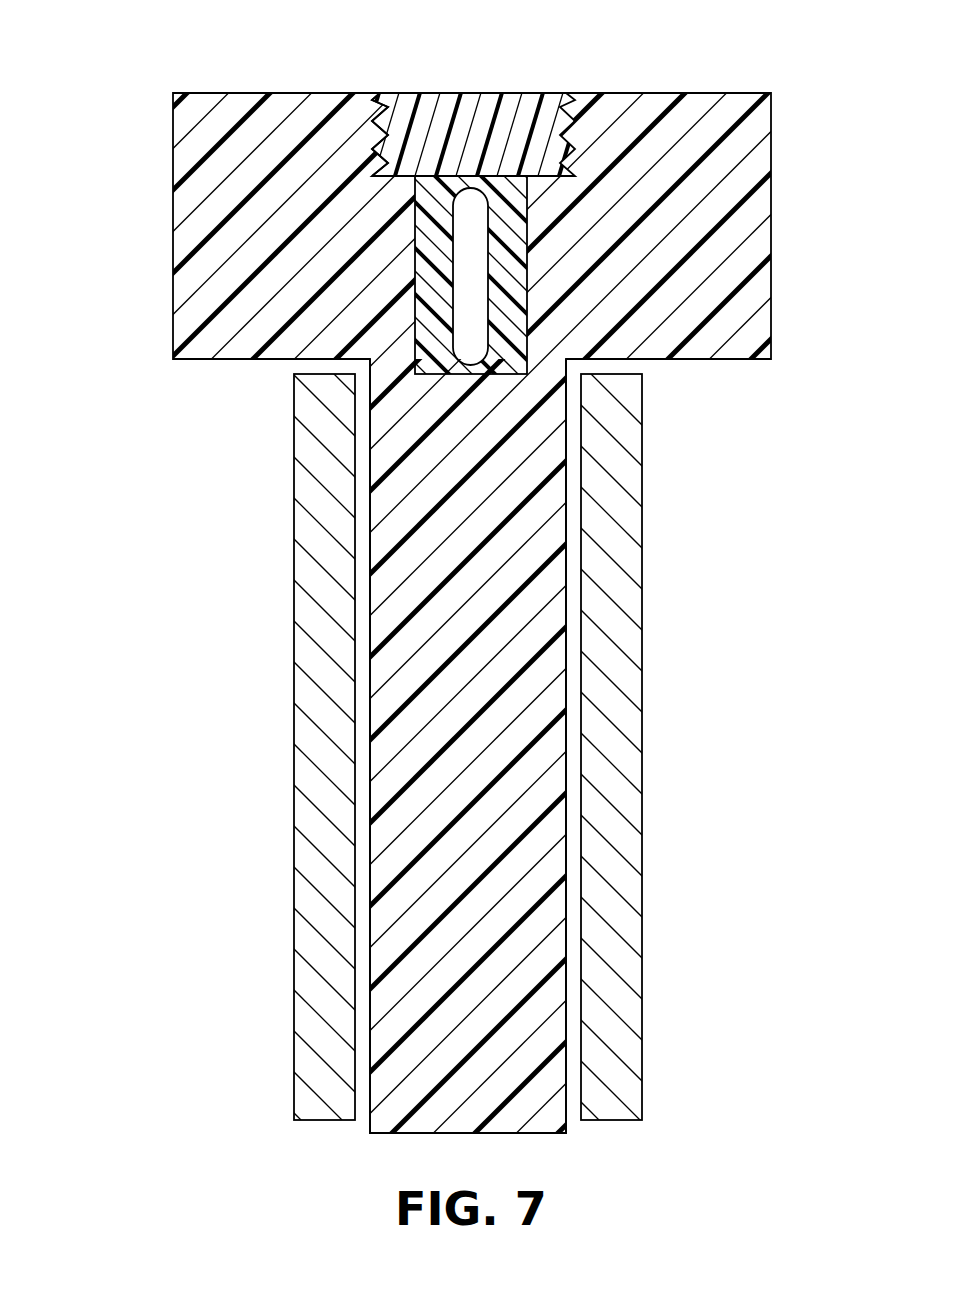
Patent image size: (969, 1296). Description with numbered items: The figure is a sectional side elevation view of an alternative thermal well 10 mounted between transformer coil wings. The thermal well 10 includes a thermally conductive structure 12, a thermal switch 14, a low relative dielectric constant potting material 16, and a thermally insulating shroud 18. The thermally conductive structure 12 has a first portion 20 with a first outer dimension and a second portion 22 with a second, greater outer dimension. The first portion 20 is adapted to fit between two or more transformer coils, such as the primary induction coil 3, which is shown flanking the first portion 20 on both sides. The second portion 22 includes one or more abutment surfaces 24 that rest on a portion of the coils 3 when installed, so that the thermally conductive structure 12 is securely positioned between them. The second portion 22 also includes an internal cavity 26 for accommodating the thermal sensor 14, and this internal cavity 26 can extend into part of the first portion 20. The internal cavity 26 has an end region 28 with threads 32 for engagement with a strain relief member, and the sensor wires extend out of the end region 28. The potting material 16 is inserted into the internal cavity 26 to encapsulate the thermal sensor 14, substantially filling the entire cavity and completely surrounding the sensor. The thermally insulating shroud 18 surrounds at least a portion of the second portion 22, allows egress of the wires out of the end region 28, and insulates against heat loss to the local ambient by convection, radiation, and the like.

The thermal well 10 is at (185, 57).
The second portion 22 is at (150, 213).
The abutment surfaces 24 is at (241, 360).
The end region 28 is at (448, 126).
The threads 32 is at (372, 130).
The internal cavity 26 is at (510, 176).
The thermally insulating shroud 18 is at (508, 237).
The potting material 16 is at (513, 290).
The thermal switch 14 is at (472, 186).
The thermally conductive structure 12 is at (408, 676).
The first portion 20 is at (530, 590).
The primary induction coil 3 is at (293, 1066).